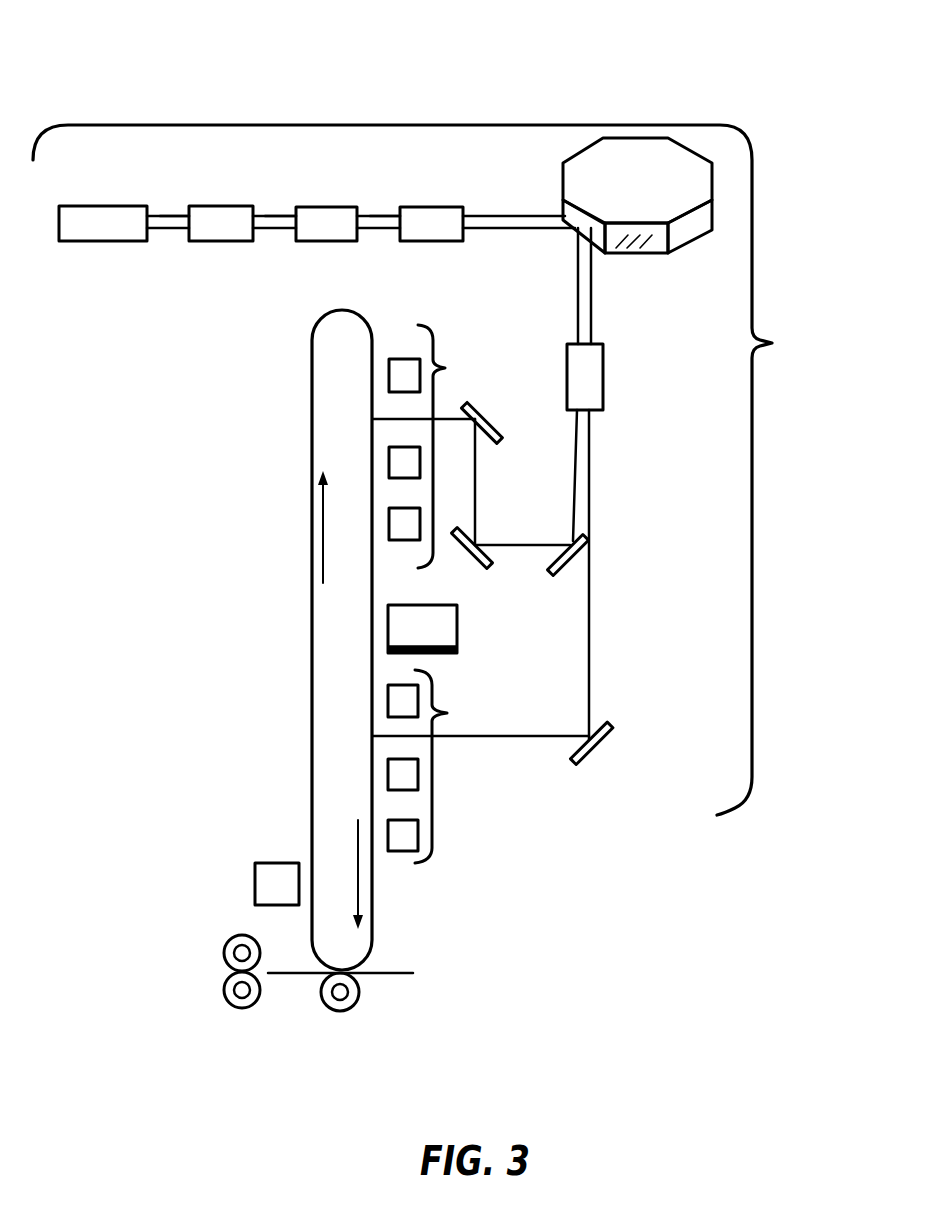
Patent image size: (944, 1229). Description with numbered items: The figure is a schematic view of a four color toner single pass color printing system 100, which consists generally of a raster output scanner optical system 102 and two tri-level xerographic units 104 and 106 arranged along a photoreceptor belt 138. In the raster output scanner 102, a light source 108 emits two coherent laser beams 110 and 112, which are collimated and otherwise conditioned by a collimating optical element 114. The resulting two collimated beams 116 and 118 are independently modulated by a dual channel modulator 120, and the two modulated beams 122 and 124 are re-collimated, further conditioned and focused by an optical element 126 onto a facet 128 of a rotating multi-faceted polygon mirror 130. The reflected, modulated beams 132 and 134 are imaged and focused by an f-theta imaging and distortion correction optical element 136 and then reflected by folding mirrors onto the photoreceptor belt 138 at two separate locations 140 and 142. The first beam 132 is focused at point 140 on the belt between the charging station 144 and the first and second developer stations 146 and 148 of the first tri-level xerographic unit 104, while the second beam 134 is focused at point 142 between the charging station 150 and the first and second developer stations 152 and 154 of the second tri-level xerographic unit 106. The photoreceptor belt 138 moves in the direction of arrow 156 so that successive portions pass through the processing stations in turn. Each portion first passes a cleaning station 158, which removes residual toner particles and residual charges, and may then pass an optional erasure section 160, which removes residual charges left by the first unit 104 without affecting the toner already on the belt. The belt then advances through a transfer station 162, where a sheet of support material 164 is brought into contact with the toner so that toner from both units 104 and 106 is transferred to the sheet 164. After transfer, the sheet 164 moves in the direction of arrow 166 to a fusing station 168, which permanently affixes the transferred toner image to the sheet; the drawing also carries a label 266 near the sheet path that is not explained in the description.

The color printing system 100 is at (86, 76).
The raster output scanner optical system 102 is at (421, 470).
The first tri-level xerographic unit 104 is at (452, 446).
The second tri-level xerographic unit 106 is at (449, 766).
The light source 108 is at (104, 210).
The coherent laser beam 110 is at (173, 214).
The coherent laser beam 112 is at (170, 231).
The collimating optical element 114 is at (223, 212).
The collimated beam 116 is at (279, 214).
The collimated beam 118 is at (271, 231).
The dual channel modulator 120 is at (322, 210).
The modulated beam 122 is at (377, 215).
The modulated beam 124 is at (385, 231).
The optical element 126 is at (433, 212).
The facet 128 is at (572, 233).
The rotating multi-faceted polygon mirror 130 is at (698, 268).
The first reflected modulated beam 132 is at (578, 306).
The second reflected modulated beam 134 is at (592, 302).
The f-theta imaging and distortion correction optical element 136 is at (593, 375).
The photoreceptor belt 138 is at (324, 320).
The first focus location 140 is at (459, 488).
The second focus location 142 is at (471, 743).
The charging station 144 is at (407, 370).
The first developer station 146 is at (410, 466).
The second developer station 148 is at (417, 525).
The charging station 150 is at (405, 693).
The first developer station 152 is at (410, 778).
The second developer station 154 is at (410, 832).
The arrow 156 is at (323, 540).
The cleaning station 158 is at (265, 880).
The erasure section 160 is at (448, 631).
The transfer station 162 is at (346, 998).
The sheet of support material 164 is at (396, 970).
The arrow 166 is at (213, 972).
The fusing station 168 is at (268, 1018).
The web feed direction 266 is at (452, 971).